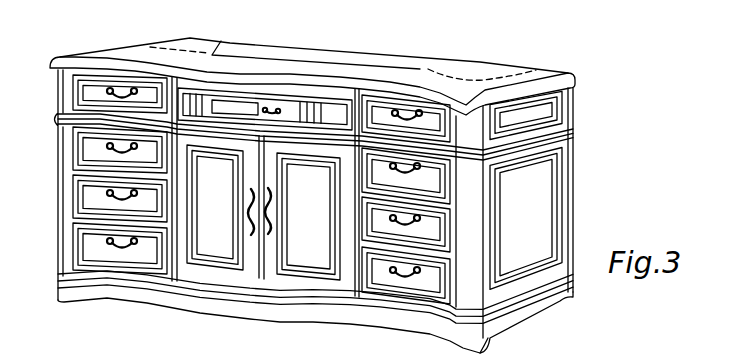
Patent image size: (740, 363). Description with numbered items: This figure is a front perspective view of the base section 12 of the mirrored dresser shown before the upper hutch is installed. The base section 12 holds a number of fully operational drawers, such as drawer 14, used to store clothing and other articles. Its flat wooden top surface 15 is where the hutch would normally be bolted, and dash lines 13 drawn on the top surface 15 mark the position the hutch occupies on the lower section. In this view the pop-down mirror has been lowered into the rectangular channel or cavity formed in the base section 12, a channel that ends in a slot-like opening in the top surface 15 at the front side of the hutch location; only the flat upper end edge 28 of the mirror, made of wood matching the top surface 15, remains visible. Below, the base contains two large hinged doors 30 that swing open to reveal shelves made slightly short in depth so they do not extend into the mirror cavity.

The base section 12 is at (58, 210).
The dash lines 13 is at (501, 74).
The drawer 14 is at (396, 281).
The top surface 15 is at (556, 52).
The upper end edge 28 is at (334, 62).
The hinged doors 30 is at (231, 226).